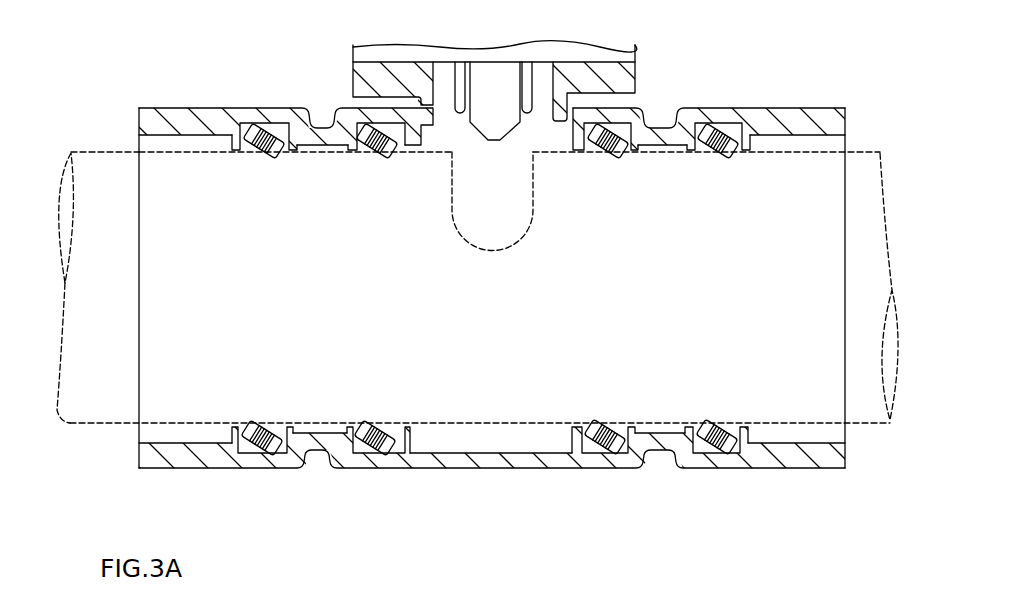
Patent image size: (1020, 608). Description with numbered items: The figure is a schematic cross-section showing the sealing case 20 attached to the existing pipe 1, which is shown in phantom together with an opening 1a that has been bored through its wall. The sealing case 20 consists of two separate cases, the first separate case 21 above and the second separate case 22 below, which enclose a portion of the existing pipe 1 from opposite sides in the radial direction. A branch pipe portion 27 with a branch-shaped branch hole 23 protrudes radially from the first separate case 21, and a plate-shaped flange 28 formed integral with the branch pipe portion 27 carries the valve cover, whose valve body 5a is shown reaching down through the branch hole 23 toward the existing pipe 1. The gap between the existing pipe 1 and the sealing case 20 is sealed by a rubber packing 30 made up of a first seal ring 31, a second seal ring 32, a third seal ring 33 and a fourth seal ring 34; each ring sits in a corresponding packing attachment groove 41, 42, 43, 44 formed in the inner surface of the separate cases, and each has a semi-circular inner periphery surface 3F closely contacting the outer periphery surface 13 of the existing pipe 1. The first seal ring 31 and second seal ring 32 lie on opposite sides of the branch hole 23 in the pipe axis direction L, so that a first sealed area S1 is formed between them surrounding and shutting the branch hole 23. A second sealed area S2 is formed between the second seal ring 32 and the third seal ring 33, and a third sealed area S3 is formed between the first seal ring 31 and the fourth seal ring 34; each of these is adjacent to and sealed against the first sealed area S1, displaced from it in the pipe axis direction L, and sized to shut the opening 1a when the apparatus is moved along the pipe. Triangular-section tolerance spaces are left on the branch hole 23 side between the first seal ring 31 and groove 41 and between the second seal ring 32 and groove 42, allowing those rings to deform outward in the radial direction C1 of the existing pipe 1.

The existing pipe 1 is at (72, 150).
The outer periphery surface 13 is at (118, 150).
The opening 1a is at (520, 222).
The sealing case 20 is at (510, 300).
The first separate case 21 is at (178, 108).
The second separate case 22 is at (163, 468).
The branch hole 23 is at (510, 300).
The flange 28 is at (352, 80).
The branch pipe portion 27 is at (425, 115).
The valve body 5a is at (492, 70).
The rubber packing 30 is at (477, 282).
The first seal ring 31 is at (372, 130).
The second seal ring 32 is at (600, 135).
The third seal ring 33 is at (706, 130).
The fourth seal ring 34 is at (256, 130).
The packing attachment groove 41 is at (362, 455).
The packing attachment groove 42 is at (622, 455).
The packing attachment groove 43 is at (700, 455).
The packing attachment groove 44 is at (252, 455).
The inner periphery surface 3F is at (268, 158).
The outward radial direction C1 is at (718, 60).
The pipe axis direction L is at (759, 293).
The first sealed area S1 is at (492, 445).
The second sealed area S2 is at (660, 430).
The third sealed area S3 is at (318, 430).